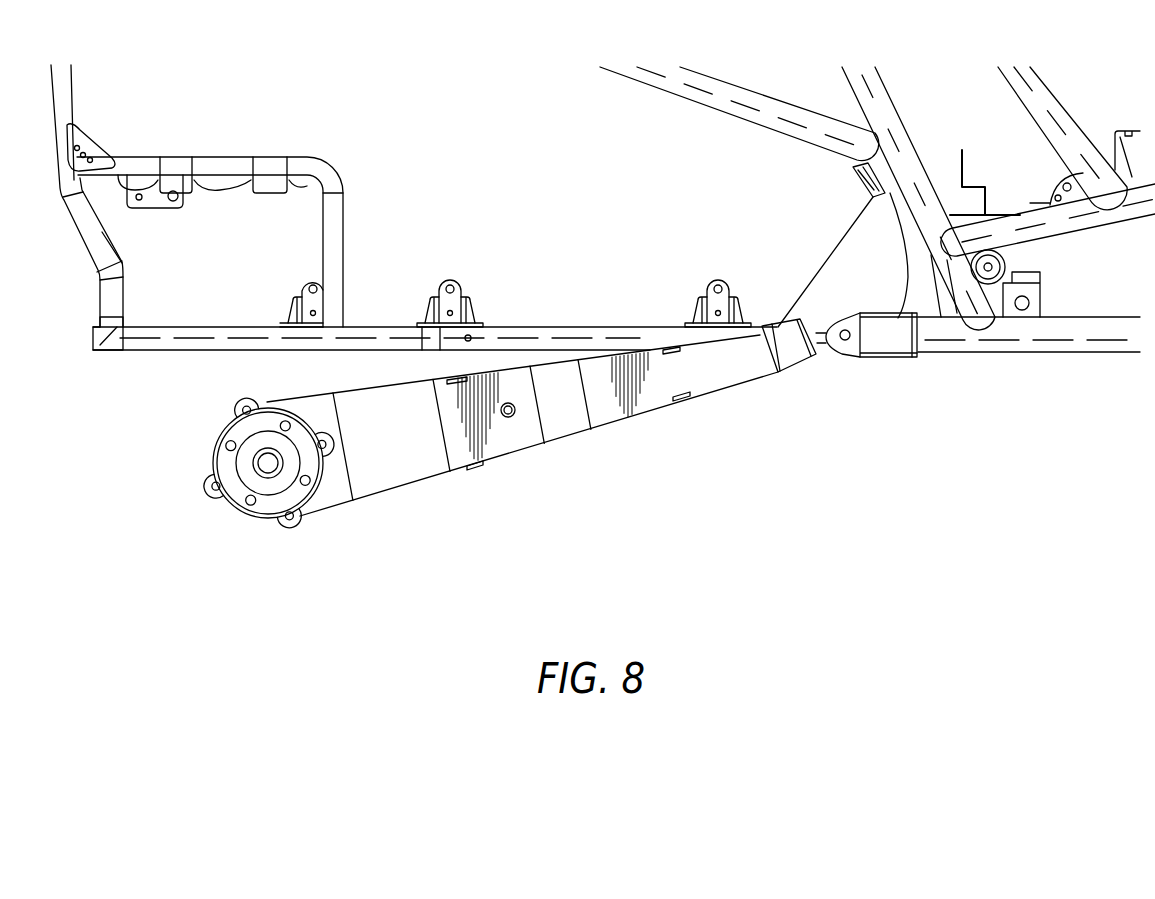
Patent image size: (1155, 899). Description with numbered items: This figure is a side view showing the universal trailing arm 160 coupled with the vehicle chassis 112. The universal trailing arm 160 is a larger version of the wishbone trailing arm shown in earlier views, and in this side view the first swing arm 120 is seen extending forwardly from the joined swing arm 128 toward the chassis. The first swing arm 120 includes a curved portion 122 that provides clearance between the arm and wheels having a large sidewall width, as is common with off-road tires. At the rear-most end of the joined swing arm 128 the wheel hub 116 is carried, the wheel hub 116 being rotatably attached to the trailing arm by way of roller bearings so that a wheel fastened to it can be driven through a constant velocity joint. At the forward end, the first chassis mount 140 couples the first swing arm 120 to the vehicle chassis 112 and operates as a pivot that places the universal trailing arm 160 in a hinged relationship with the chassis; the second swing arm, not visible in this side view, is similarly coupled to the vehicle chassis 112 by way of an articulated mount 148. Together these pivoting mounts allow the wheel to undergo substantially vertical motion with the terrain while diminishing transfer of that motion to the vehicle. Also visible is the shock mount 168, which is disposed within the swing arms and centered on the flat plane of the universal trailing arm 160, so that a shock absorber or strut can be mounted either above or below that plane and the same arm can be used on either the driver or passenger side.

The vehicle chassis 112 is at (590, 338).
The wheel hub 116 is at (247, 515).
The first swing arm 120 is at (546, 429).
The curved portion 122 is at (567, 427).
The joined swing arm 128 is at (418, 467).
The first chassis mount 140 is at (822, 345).
The articulated mount 148 is at (838, 272).
The universal trailing arm 160 is at (593, 553).
The shock mount 168 is at (508, 418).